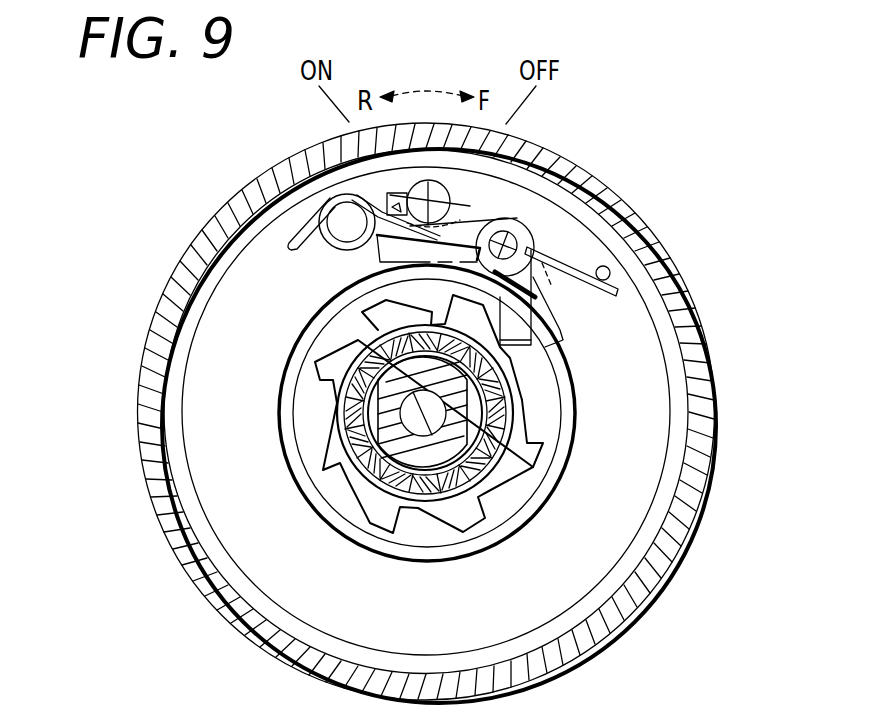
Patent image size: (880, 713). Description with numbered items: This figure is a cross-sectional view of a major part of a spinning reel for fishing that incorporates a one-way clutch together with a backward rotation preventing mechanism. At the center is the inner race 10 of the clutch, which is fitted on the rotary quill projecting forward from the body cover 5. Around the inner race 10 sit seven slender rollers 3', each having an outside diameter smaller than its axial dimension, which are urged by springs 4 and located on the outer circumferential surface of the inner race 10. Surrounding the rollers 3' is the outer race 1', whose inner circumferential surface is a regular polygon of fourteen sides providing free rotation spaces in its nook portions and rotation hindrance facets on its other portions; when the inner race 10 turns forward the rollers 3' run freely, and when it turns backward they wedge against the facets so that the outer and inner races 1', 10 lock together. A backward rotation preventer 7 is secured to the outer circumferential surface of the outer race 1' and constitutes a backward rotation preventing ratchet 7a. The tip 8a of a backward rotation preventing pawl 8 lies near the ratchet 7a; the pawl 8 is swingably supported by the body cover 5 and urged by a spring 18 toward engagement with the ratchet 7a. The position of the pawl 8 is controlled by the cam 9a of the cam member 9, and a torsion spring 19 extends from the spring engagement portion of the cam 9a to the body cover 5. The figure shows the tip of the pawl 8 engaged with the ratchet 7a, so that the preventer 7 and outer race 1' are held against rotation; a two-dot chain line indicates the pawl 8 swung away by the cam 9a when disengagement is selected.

The body cover 5 is at (657, 314).
The backward rotation preventer 7 is at (307, 463).
The backward rotation preventing ratchet 7a is at (530, 432).
The outer race 1' is at (313, 414).
The springs 4 is at (468, 440).
The slender rollers 3' is at (301, 409).
The inner race 10 is at (377, 427).
The backward rotation preventing pawl 8 is at (545, 232).
The tip of the pawl 8a is at (512, 354).
The spring 18 is at (617, 290).
The cam member 9 is at (453, 183).
The cam 9a is at (470, 206).
The torsion spring 19 is at (289, 241).